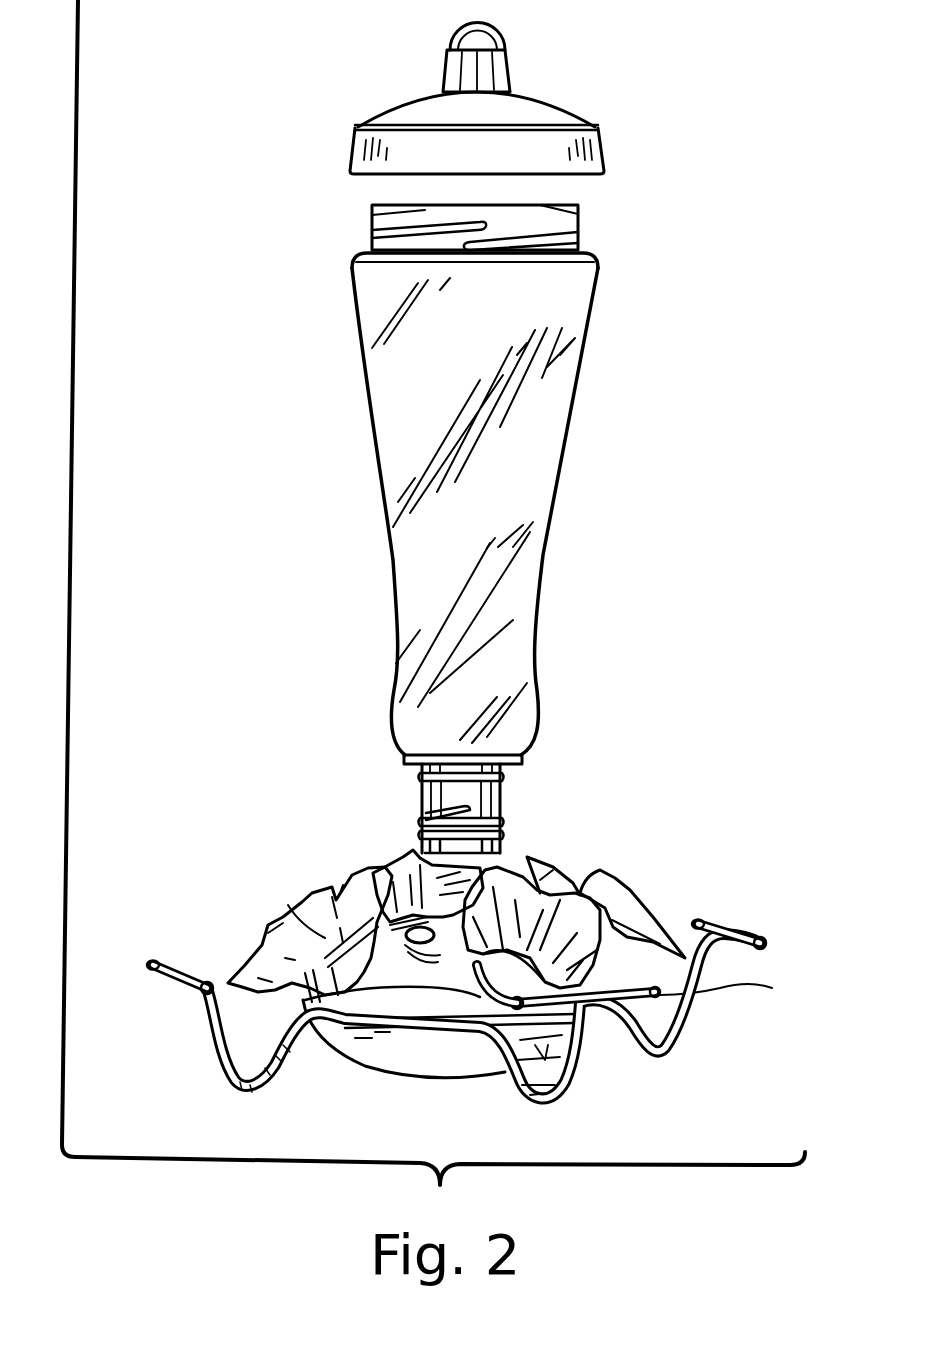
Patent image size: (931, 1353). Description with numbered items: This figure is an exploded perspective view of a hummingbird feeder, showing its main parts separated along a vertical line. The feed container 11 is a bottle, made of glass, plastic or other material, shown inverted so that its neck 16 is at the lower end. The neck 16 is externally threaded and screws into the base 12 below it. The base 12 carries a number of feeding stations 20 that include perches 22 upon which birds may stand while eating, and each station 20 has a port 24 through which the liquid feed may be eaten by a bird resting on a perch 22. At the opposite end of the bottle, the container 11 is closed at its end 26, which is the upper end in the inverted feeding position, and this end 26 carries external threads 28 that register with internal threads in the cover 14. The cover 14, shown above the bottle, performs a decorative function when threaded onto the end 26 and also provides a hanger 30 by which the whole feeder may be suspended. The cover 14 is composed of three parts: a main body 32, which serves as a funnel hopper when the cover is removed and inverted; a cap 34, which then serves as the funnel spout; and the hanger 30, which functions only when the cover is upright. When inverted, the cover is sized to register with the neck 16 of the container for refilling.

The feed container 11 is at (467, 483).
The base 12 is at (478, 951).
The cover 14 is at (481, 89).
The neck 16 is at (502, 803).
The feeding stations 20 is at (560, 860).
The perches 22 is at (180, 978).
The port 24 is at (439, 1024).
The end 26 is at (578, 212).
The external threads 28 is at (372, 228).
The hanger 30 is at (500, 38).
The main body 32 is at (352, 140).
The cap 34 is at (510, 78).